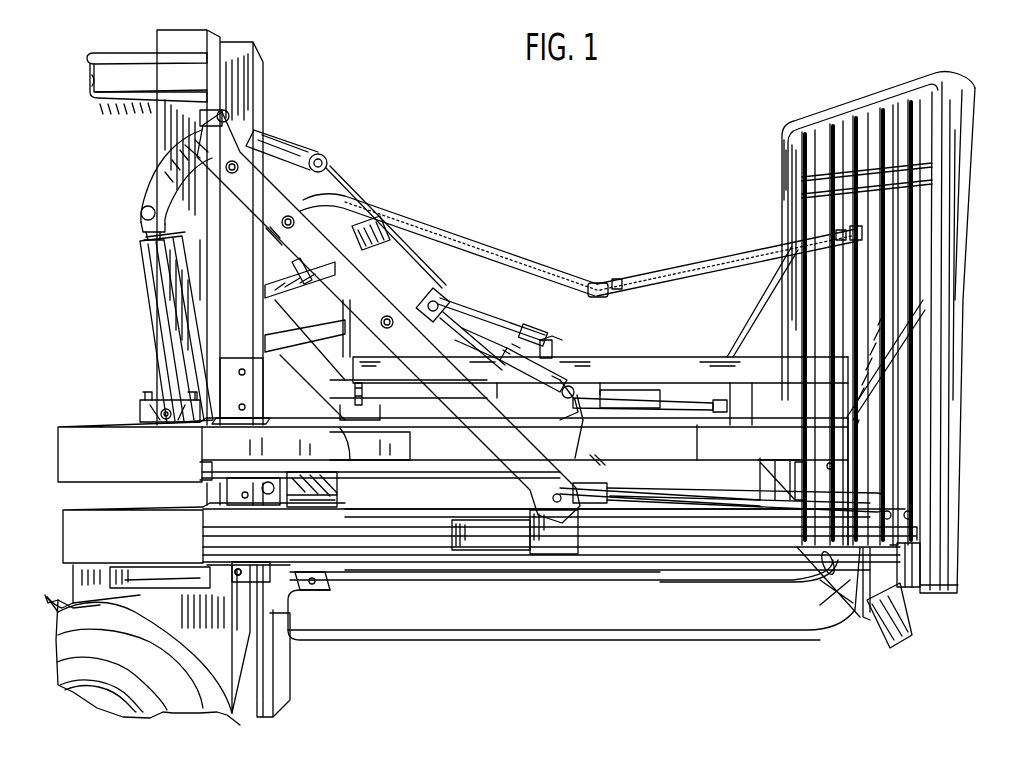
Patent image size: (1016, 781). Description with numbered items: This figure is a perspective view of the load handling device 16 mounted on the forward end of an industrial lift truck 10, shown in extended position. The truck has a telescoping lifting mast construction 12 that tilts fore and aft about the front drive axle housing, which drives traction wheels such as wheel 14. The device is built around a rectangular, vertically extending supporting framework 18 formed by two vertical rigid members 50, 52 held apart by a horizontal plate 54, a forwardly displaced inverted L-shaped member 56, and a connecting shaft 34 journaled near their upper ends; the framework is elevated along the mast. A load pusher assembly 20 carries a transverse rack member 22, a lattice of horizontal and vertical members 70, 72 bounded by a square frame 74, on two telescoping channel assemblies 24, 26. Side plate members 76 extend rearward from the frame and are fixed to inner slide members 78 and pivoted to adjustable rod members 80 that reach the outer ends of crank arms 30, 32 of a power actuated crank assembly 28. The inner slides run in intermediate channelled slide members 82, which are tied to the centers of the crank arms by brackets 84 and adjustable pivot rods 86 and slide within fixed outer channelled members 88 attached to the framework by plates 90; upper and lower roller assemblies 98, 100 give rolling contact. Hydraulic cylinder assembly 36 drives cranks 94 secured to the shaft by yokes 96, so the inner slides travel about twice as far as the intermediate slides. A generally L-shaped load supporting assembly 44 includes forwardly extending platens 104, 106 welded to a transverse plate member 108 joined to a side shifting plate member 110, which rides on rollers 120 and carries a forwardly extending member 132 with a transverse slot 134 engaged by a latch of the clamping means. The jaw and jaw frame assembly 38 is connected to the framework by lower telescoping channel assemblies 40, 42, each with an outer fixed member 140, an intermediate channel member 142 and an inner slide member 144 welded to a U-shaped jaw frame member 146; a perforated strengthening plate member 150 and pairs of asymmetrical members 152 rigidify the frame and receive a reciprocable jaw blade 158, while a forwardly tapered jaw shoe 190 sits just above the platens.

The industrial lift truck 10 is at (112, 187).
The telescoping lifting mast construction 12 is at (150, 124).
The traction wheel 14 is at (240, 725).
The device 16 is at (603, 240).
The supporting framework 18 is at (224, 293).
The load pusher assembly 20 is at (976, 414).
The rack member 22 is at (956, 338).
The telescoping channel assembly 24 is at (410, 472).
The telescoping channel assembly 26 is at (585, 357).
The power actuated crank assembly 28 is at (162, 165).
The crank arm 30 is at (412, 233).
The crank arm 32 is at (445, 236).
The connecting shaft 34 is at (292, 150).
The hydraulic cylinder assembly 36 is at (145, 270).
The jaw and jaw frame assembly 38 is at (906, 598).
The telescoping channel assembly 40 is at (451, 502).
The telescoping channel assembly 42 is at (372, 410).
The load supporting assembly 44 is at (379, 649).
The vertically extending rigid member 50 is at (170, 292).
The vertically extending rigid member 52 is at (336, 313).
The horizontally extending plate 54 is at (287, 282).
The inverted L-shaped member 56 is at (263, 348).
The horizontally extending members 70 is at (930, 173).
The vertically extending members 72 is at (910, 92).
The square frame 74 is at (952, 258).
The side plate member 76 is at (752, 328).
The inner slide member 78 is at (645, 357).
The adjustable rod member 80 is at (656, 398).
The intermediate channelled slide member 82 is at (560, 355).
The bracket 84 is at (548, 340).
The adjustable pivot rod 86 is at (492, 343).
The fixed outer channelled member 88 is at (357, 356).
The plate 90 is at (230, 378).
The crank 94 is at (142, 200).
The yoke 96 is at (230, 112).
The upper roller assembly 98 is at (140, 407).
The lower roller assembly 100 is at (359, 392).
The platen 104 is at (557, 641).
The platen 106 is at (642, 562).
The transversely extending plate member 108 is at (325, 608).
The side shifting plate member 110 is at (350, 440).
The roller 120 is at (330, 592).
The forwardly and transversely extending member 132 is at (343, 482).
The transversely extending slot 134 is at (343, 498).
The outer fixed member 140 is at (83, 532).
The intermediate channel member 142 is at (555, 555).
The inner slide member 144 is at (710, 547).
The jaw frame member 146 is at (863, 620).
The perforated strengthening plate member 150 is at (848, 587).
The asymmetrical members 152 is at (785, 467).
The jaw blade 158 is at (930, 564).
The jaw shoe 190 is at (897, 645).